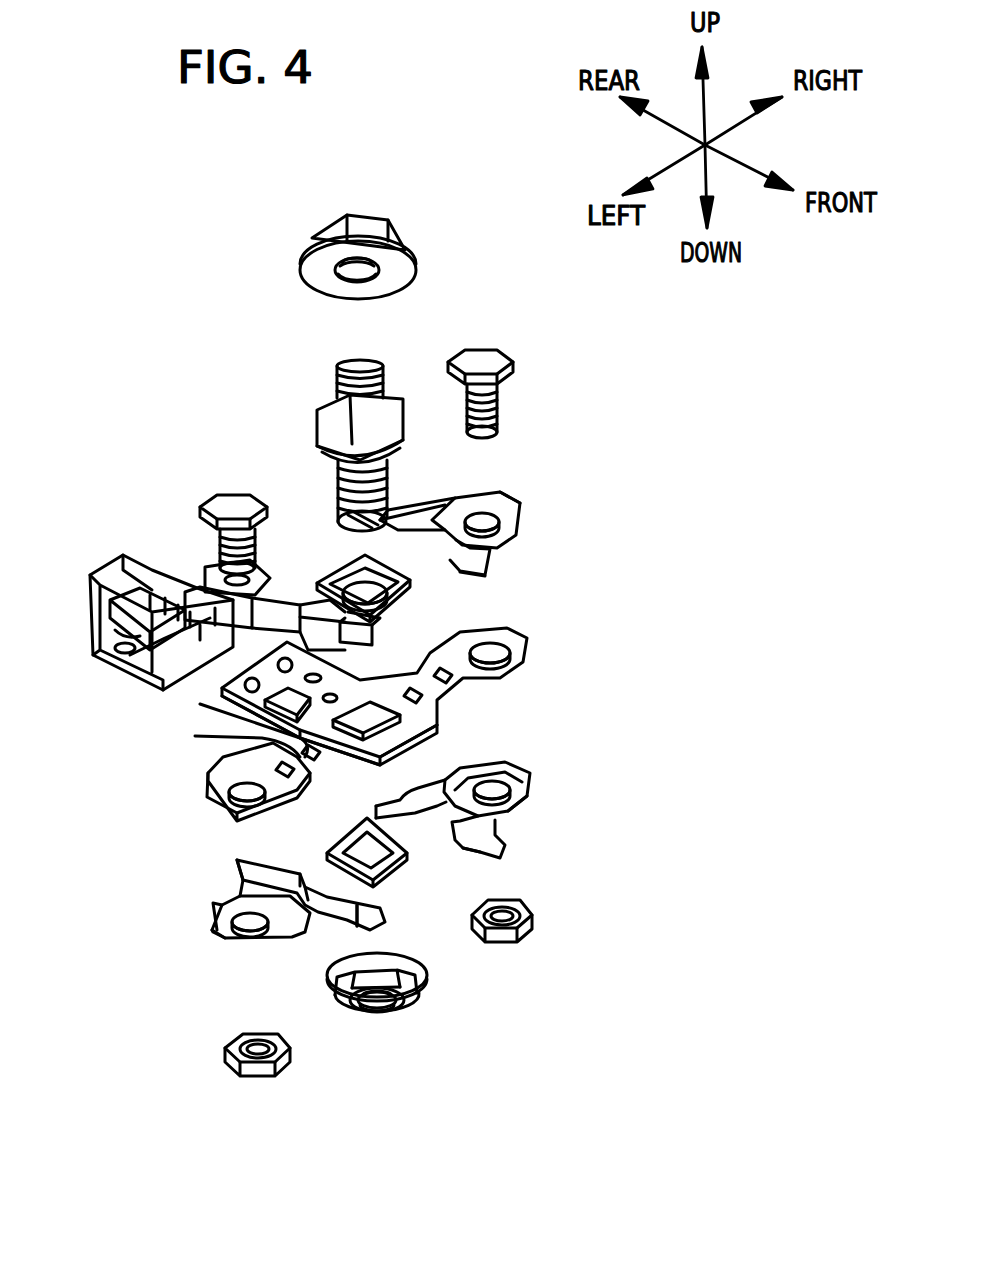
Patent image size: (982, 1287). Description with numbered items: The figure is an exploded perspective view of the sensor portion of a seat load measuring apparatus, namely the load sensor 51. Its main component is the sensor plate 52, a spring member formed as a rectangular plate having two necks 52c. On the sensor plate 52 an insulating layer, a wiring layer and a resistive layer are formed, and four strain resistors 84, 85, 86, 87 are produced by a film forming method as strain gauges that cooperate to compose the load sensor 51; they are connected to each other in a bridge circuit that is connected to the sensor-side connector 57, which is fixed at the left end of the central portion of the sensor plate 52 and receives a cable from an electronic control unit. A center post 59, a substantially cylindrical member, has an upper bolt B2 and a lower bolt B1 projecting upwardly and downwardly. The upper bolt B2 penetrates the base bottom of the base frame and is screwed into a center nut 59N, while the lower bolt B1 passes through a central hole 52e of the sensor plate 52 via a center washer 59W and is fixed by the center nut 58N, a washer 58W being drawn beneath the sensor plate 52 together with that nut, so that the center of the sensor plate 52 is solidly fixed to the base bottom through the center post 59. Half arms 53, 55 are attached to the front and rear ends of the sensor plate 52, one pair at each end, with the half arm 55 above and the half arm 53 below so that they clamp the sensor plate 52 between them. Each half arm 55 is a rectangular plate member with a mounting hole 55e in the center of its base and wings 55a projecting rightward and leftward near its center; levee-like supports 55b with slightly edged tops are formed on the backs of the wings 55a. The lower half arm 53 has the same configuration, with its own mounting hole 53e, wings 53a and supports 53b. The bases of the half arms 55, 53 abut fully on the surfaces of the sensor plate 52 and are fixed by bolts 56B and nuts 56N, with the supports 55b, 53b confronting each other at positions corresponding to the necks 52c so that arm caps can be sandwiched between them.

The load sensor 51 is at (158, 433).
The sensor plate 52 is at (366, 727).
The neck 52c is at (443, 690).
The central hole 52e is at (360, 733).
The half arm 53 is at (487, 820).
The wing 53a is at (400, 798).
The support 53b is at (257, 867).
The mounting hole 53e is at (525, 805).
The half arm 55 is at (275, 560).
The wing 55a is at (230, 573).
The support 55b is at (213, 562).
The mounting hole 55e is at (520, 503).
The bolt 56B is at (500, 400).
The nut 56N is at (252, 1078).
The sensor-side connector 57 is at (100, 607).
The center nut 58N is at (410, 1012).
The square washer 58W is at (412, 872).
The center post 59 is at (334, 439).
The center nut 59N is at (375, 225).
The center washer 59W is at (293, 556).
The strain resistor 84 is at (220, 777).
The strain resistor 85 is at (297, 730).
The strain resistor 86 is at (440, 705).
The strain resistor 87 is at (520, 678).
The lower bolt B1 is at (324, 563).
The upper bolt B2 is at (350, 372).